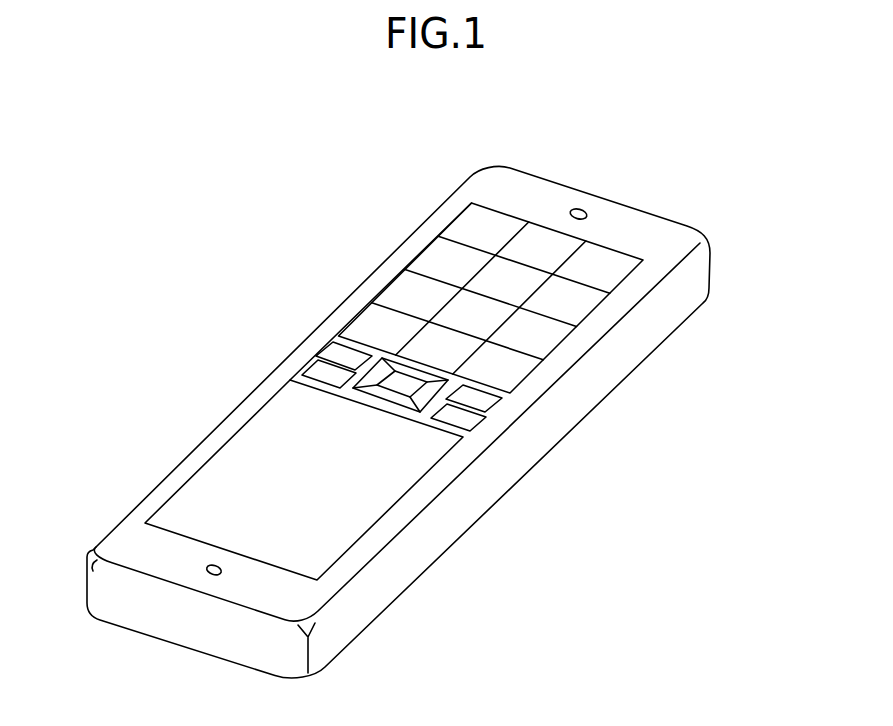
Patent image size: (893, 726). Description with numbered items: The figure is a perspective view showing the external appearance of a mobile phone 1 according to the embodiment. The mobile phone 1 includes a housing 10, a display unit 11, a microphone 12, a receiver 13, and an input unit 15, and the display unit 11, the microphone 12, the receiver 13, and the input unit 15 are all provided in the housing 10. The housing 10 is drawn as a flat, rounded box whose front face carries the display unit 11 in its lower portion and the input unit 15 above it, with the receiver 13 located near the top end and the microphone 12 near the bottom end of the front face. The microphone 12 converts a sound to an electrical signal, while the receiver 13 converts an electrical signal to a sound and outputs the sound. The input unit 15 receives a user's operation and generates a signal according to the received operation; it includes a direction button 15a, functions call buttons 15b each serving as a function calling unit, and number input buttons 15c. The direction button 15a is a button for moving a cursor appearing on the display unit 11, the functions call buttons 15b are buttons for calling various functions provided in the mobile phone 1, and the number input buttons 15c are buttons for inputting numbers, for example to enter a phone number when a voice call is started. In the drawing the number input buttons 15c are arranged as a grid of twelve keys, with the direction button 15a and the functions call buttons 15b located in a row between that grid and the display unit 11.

The mobile phone 1 is at (759, 108).
The housing 10 is at (488, 166).
The display unit 11 is at (406, 494).
The microphone 12 is at (581, 209).
The receiver 13 is at (205, 569).
The input unit 15 is at (346, 209).
The direction button 15a is at (374, 400).
The functions call buttons 15b is at (307, 362).
The number input buttons 15c is at (437, 262).